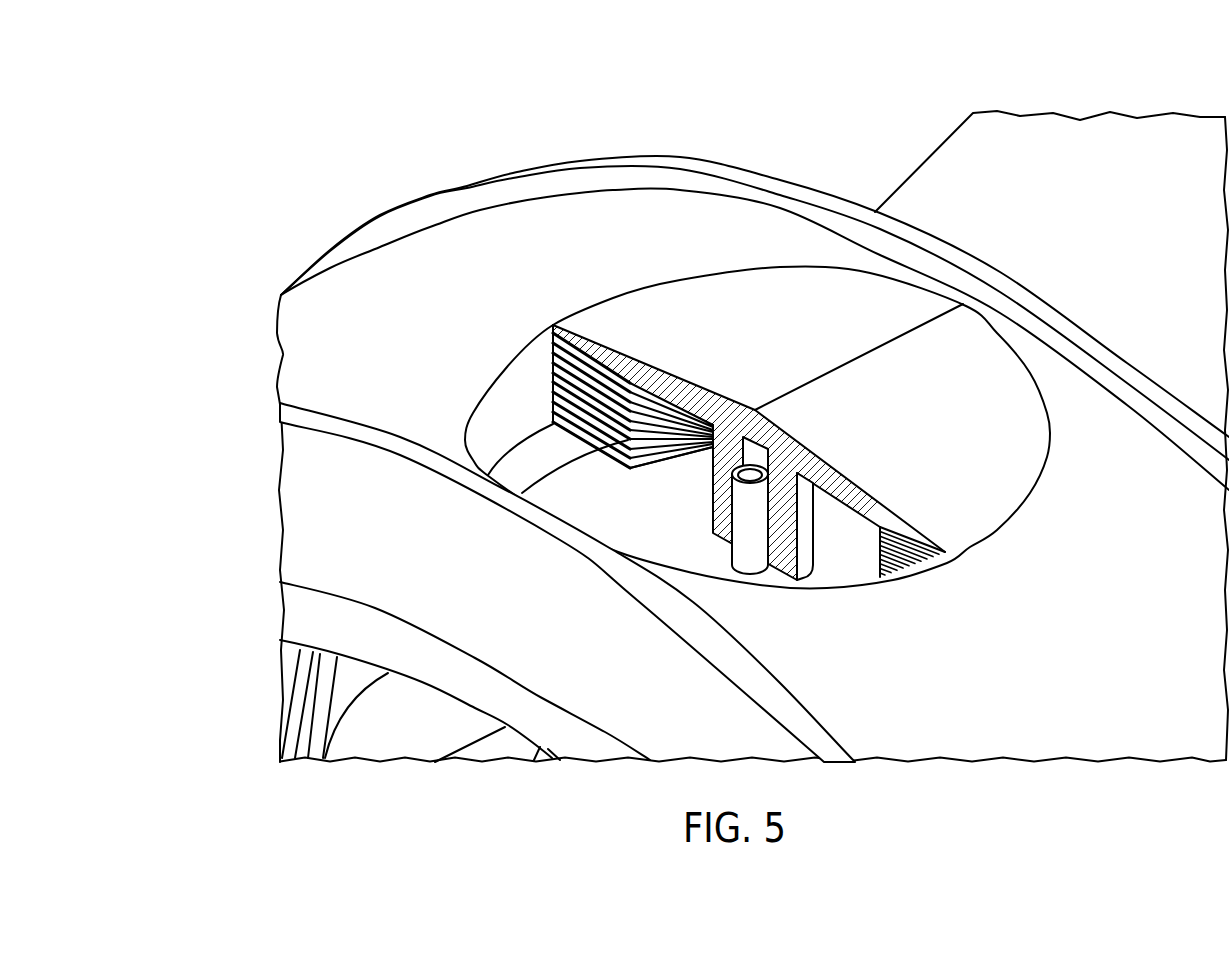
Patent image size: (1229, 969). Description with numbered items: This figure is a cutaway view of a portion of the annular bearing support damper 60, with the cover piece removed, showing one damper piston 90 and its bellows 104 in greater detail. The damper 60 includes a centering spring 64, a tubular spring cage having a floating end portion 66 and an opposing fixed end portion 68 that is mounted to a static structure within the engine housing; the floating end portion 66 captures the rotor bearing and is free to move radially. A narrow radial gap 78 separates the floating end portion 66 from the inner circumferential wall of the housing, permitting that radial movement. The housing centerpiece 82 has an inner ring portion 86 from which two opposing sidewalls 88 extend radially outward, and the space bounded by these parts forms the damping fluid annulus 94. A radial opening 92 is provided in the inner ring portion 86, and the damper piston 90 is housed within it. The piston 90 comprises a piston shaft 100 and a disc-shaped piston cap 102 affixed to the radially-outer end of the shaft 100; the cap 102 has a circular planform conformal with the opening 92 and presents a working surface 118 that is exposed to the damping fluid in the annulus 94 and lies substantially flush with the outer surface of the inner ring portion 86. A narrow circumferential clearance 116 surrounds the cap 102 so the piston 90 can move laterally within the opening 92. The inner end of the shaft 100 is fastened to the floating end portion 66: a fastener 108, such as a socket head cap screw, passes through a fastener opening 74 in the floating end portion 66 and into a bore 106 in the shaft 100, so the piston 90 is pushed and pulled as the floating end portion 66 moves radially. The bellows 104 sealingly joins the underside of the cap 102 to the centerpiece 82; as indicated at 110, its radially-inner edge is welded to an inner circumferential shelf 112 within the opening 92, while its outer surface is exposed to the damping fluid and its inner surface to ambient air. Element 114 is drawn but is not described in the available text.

The annular bearing support damper 60 is at (304, 111).
The centering spring 64 is at (283, 607).
The floating end portion 66 is at (430, 684).
The fixed end portion 68 is at (1155, 120).
The fastener openings 74 is at (728, 550).
The radial gap 78 is at (486, 662).
The annular housing centerpiece 82 is at (579, 157).
The inner ring portion 86 is at (540, 475).
The opposing sidewalls 88 is at (1032, 295).
The damper piston 90 is at (975, 550).
The radial opening 92 is at (703, 507).
The damping fluid annulus 94 is at (377, 323).
The piston shaft 100 is at (813, 540).
The piston cap 102 is at (790, 275).
The bellows 104 is at (553, 378).
The bore 106 is at (755, 452).
The fastener 108 is at (752, 566).
The first circumferential weld joint 110 is at (553, 328).
The inner circumferential shelf 112 is at (503, 460).
The bottom lamination 114 is at (553, 420).
The circumferential clearance 116 is at (1049, 450).
The working surface 118 is at (897, 424).